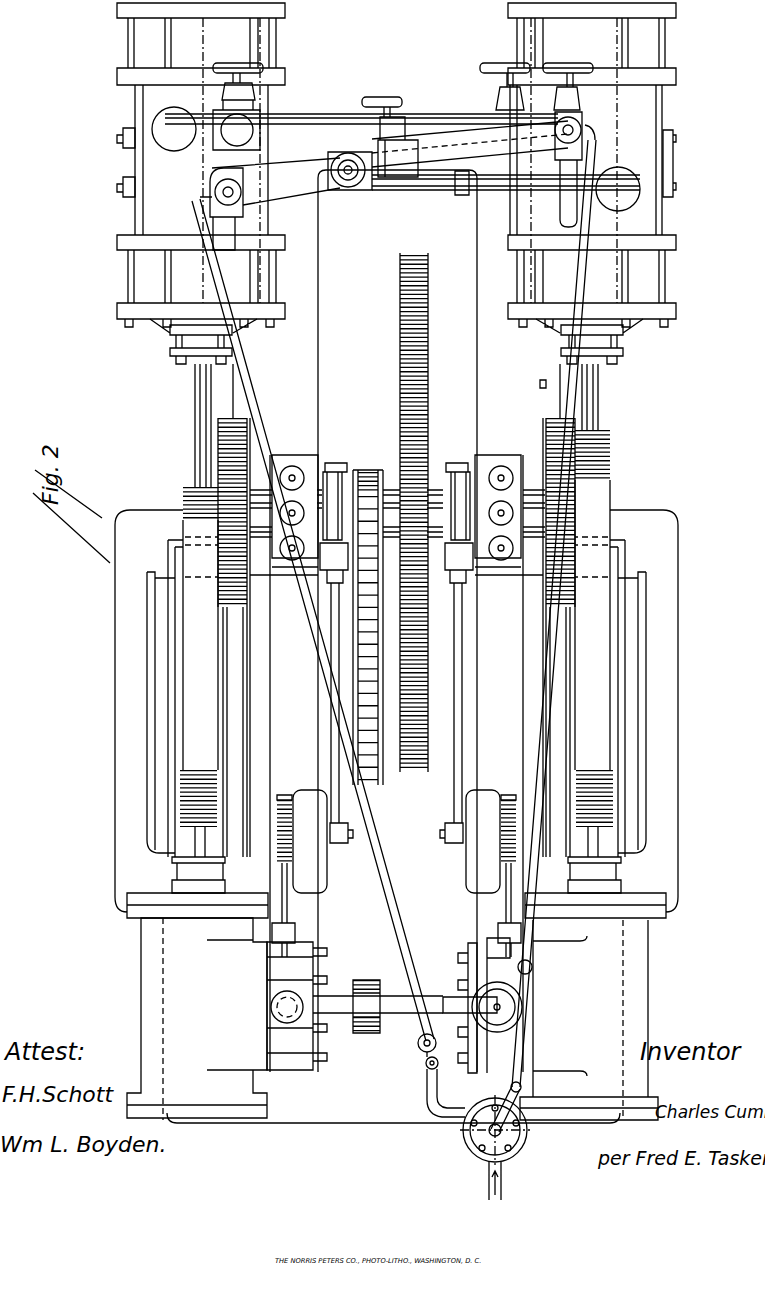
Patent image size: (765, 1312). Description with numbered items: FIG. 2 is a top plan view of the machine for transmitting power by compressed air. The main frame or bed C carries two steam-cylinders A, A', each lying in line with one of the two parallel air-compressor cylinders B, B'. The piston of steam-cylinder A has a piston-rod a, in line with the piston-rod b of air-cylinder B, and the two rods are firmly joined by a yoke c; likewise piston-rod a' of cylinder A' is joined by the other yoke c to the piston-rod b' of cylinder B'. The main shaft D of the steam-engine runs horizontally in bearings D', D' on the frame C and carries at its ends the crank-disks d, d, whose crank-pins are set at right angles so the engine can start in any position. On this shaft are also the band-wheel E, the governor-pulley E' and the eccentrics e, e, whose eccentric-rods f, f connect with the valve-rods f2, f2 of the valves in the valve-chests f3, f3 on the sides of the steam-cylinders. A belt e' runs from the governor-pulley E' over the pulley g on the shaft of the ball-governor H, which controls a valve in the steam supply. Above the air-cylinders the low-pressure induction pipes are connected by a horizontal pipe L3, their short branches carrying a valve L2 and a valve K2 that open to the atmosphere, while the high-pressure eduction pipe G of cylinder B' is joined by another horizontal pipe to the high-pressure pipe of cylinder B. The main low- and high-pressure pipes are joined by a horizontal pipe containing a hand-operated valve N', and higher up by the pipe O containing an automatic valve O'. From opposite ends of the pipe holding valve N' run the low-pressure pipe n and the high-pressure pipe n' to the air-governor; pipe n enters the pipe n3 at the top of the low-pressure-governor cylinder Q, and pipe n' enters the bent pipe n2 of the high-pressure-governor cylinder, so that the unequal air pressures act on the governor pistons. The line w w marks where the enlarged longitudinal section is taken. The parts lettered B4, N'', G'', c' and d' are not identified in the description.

The air-compressor cylinder B is at (201, 161).
The air-compressor cylinder B' is at (592, 161).
The cylinder tie rods B4 is at (188, 66).
The valve L2 is at (232, 64).
The horizontal pipe L3 is at (452, 95).
The valve K2 is at (505, 64).
The hand-operated valve N' is at (361, 155).
The lower pipe N'' is at (506, 210).
The air-eduction pipe G is at (623, 201).
The pipe coupling G'' is at (465, 203).
The horizontal pipe O is at (391, 181).
The automatic valve O' is at (350, 190).
The band-wheel E is at (400, 512).
The governor-pulley E' is at (337, 507).
The main shaft D is at (372, 612).
The bearings D' is at (396, 502).
The eccentrics e is at (459, 518).
The belt e' is at (397, 540).
The main frame C is at (408, 646).
The yoke c is at (396, 637).
The shaft c' is at (378, 974).
The piston-rod b is at (191, 567).
The piston-rod b' is at (603, 567).
The crank-disks d is at (232, 610).
The rack d' is at (557, 610).
The piston-rod a is at (176, 831).
The piston-rod a' is at (594, 831).
The section line w is at (545, 380).
The eccentric-rods f is at (331, 740).
The valve-rods f2 is at (288, 915).
The valve-chests f3 is at (282, 1050).
The pulley g is at (360, 980).
The ball-governor H is at (480, 995).
The low-pressure-governor cylinder Q is at (528, 1140).
The steam-cylinder A is at (197, 1019).
The steam-cylinder A' is at (589, 1020).
The low-pressure pipe n is at (553, 608).
The high-pressure pipe n' is at (313, 620).
The bent pipe n2 is at (433, 1120).
The projecting pipe n3 is at (525, 1135).